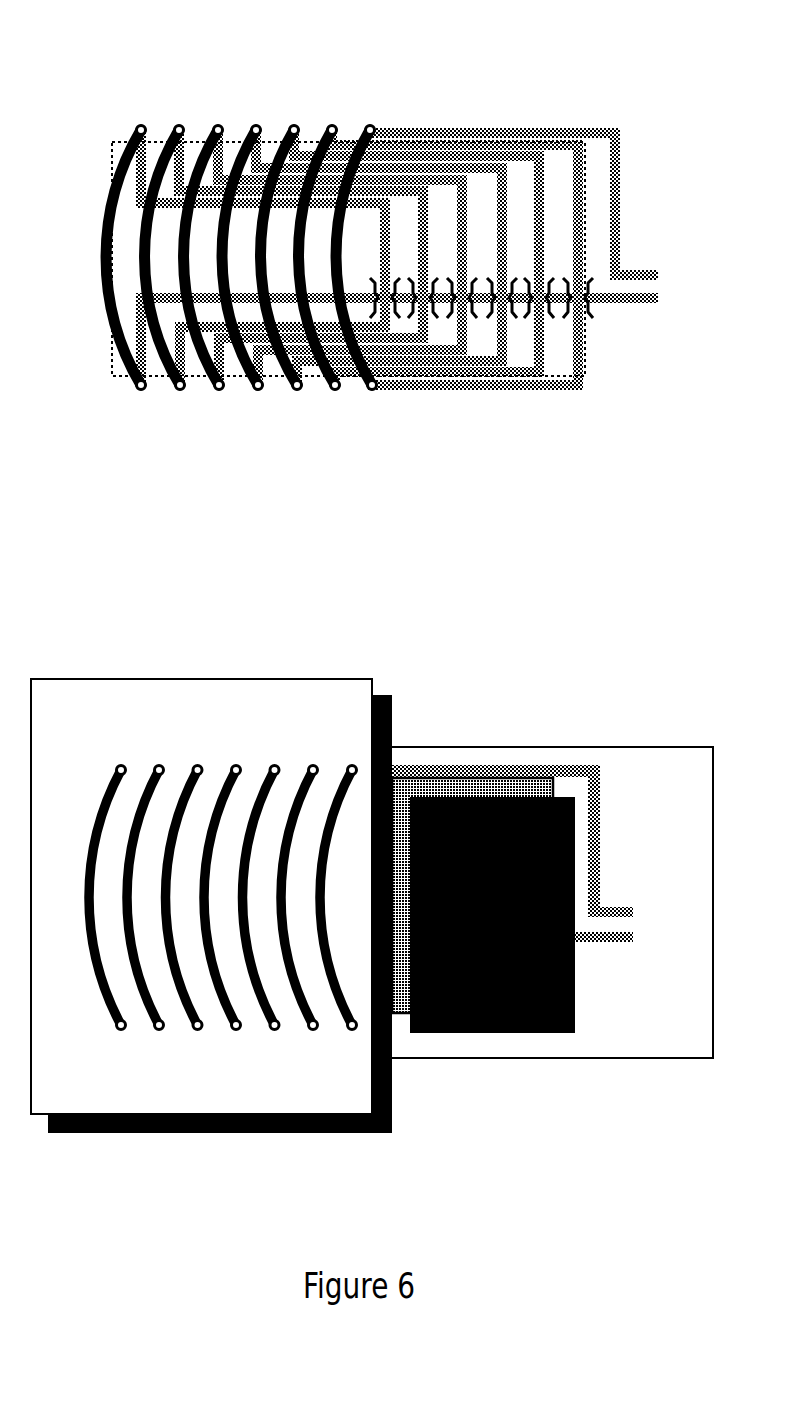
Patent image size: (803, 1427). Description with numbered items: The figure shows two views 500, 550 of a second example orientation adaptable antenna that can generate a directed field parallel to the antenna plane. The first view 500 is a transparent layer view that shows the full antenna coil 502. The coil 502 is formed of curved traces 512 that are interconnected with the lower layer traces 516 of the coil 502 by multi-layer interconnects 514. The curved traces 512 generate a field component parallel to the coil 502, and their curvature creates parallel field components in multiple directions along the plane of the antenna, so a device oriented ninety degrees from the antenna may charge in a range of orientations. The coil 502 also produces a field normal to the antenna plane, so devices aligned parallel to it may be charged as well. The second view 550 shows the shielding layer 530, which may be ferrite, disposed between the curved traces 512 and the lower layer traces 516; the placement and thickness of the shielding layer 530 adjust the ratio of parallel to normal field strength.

The first view 500 is at (130, 52).
The antenna coil 502 is at (273, 117).
The curved traces 512 is at (110, 198).
The multi-layer interconnects 514 is at (142, 127).
The shielding layer 530 is at (112, 152).
The lower layer traces 516 is at (578, 343).
The second view 550 is at (188, 652).